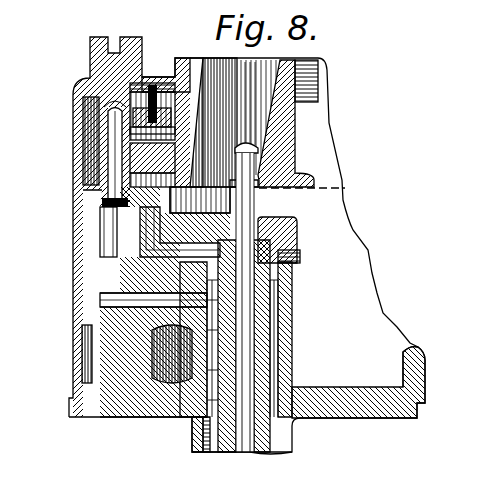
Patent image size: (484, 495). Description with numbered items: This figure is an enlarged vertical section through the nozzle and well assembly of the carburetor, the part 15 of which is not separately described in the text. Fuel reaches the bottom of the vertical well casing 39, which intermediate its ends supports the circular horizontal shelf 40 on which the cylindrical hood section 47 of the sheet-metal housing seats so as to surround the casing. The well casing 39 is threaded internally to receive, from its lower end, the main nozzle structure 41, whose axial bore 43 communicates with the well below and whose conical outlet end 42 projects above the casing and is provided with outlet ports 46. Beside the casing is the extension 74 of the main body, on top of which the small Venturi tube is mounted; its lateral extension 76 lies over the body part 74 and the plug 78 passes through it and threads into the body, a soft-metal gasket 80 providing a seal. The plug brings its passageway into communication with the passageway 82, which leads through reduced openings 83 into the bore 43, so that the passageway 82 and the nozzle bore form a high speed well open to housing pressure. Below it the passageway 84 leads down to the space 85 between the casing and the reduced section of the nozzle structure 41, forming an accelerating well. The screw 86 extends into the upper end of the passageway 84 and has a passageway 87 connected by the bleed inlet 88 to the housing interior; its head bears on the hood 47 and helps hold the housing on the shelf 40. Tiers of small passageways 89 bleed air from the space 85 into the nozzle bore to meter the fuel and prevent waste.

The hub 15 is at (292, 138).
The well casing 39 is at (292, 452).
The circular horizontal shelf 40 is at (376, 414).
The main nozzle structure 41 is at (269, 343).
The outlet end 42 is at (260, 155).
The axial bore 43 is at (242, 323).
The outlet ports 46 is at (228, 150).
The hood section 47 is at (76, 226).
The extension 74 is at (105, 352).
The lateral extension 76 is at (180, 170).
The plug 78 is at (143, 100).
The gasket 80 is at (200, 200).
The passageway 82 is at (160, 252).
The reduced openings 83 is at (250, 240).
The passageway 84 is at (127, 307).
The space 85 is at (280, 363).
The screw 86 is at (110, 121).
The passageway 87 is at (113, 142).
The bleed inlet 88 is at (113, 100).
The small passageways 89 is at (200, 393).